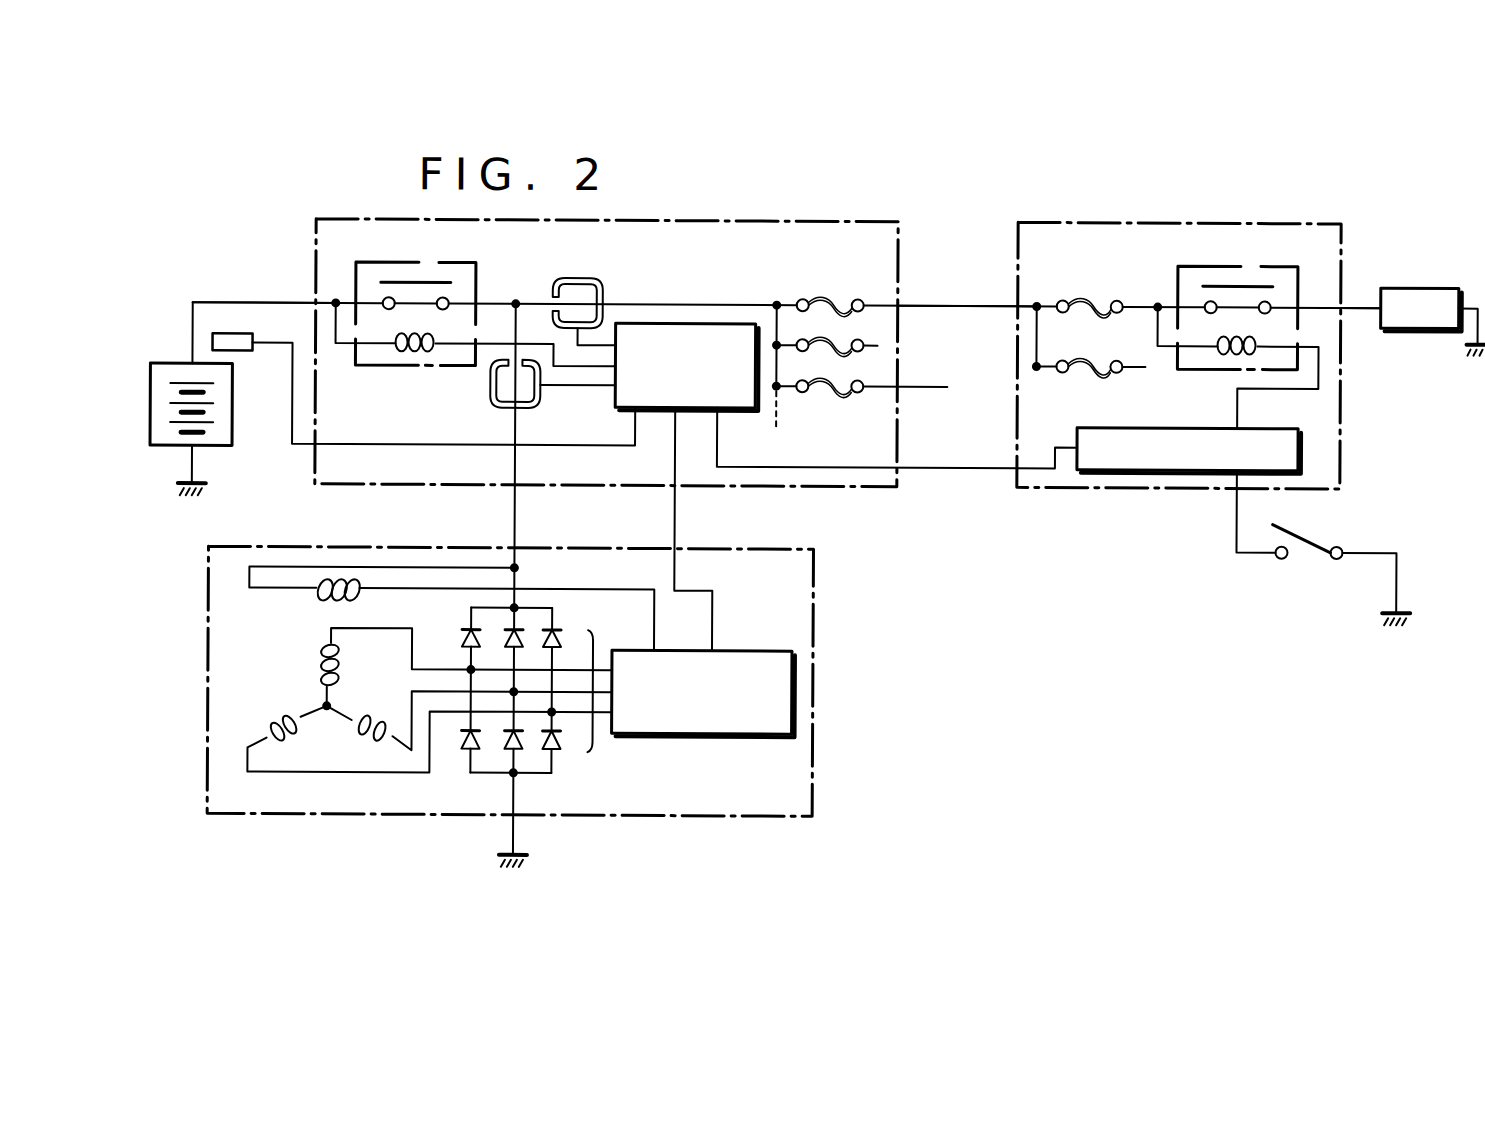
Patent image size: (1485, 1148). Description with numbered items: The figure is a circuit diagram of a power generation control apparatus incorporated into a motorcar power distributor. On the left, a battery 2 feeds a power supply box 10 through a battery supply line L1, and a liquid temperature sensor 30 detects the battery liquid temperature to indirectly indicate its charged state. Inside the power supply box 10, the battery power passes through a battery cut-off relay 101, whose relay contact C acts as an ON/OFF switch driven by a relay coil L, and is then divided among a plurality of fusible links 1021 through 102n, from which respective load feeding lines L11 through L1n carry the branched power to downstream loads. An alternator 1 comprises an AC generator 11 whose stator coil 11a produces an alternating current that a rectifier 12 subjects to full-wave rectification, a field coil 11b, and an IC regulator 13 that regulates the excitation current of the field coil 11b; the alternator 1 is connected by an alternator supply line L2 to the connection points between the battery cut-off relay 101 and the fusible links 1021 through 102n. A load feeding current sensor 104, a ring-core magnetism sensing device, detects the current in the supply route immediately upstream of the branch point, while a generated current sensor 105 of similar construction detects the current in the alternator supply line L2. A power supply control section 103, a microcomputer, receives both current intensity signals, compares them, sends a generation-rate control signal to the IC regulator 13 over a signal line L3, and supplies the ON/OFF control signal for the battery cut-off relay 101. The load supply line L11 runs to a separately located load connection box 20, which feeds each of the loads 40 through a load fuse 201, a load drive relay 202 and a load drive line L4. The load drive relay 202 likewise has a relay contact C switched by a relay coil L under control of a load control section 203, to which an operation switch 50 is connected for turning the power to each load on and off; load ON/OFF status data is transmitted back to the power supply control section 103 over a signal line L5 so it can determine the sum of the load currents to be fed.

The alternator 1 is at (208, 570).
The battery 2 is at (232, 400).
The power supply box 10 is at (765, 221).
The AC generator 11 is at (411, 692).
The stator coil 11a is at (317, 677).
The field coil 11b is at (337, 576).
The rectifier 12 is at (594, 737).
The IC regulator 13 is at (732, 650).
The load connection box 20 is at (1130, 221).
The liquid temperature sensor 30 is at (232, 331).
The loads 40 is at (1400, 330).
The operation switch 50 is at (1302, 557).
The battery cut-off relay 101 is at (422, 263).
The fusible link 1021 is at (815, 290).
The fusible link 102n is at (828, 402).
The power supply control section 103 is at (665, 323).
The load feeding current sensor 104 is at (580, 268).
The generated current sensor 105 is at (532, 408).
The load fuse 201 is at (1082, 288).
The load drive relay 202 is at (1237, 302).
The load control section 203 is at (1196, 470).
The relay contact C is at (462, 292).
The relay coil L is at (418, 360).
The battery supply line L1 is at (254, 304).
The load supply line L11 is at (955, 302).
The load feeding line L1n is at (948, 388).
The alternator supply line L2 is at (515, 524).
The signal line L3 is at (675, 524).
The load drive line L4 is at (1356, 303).
The signal line L5 is at (950, 468).